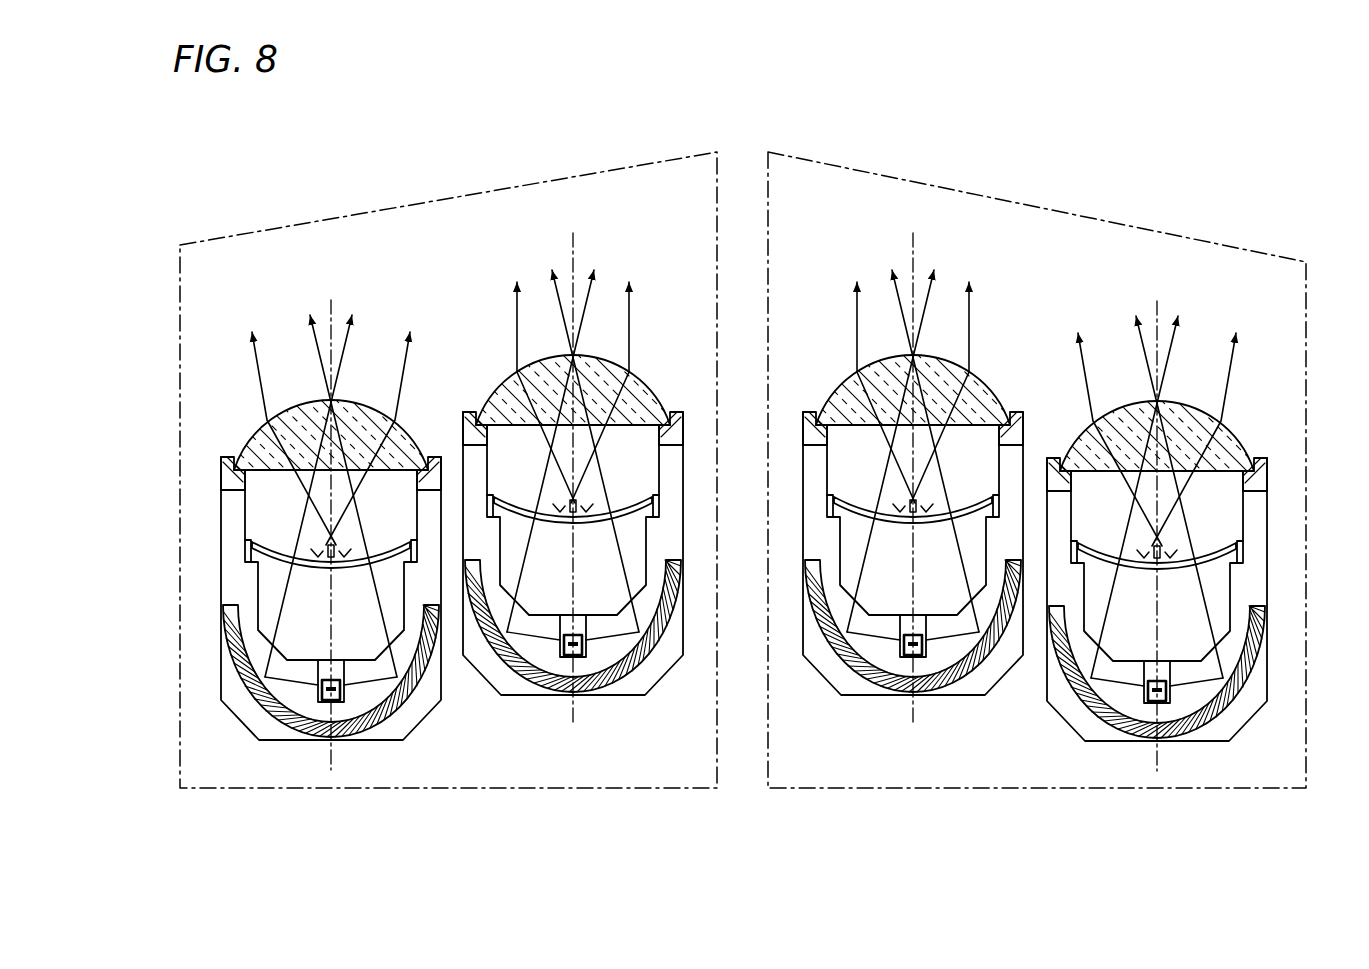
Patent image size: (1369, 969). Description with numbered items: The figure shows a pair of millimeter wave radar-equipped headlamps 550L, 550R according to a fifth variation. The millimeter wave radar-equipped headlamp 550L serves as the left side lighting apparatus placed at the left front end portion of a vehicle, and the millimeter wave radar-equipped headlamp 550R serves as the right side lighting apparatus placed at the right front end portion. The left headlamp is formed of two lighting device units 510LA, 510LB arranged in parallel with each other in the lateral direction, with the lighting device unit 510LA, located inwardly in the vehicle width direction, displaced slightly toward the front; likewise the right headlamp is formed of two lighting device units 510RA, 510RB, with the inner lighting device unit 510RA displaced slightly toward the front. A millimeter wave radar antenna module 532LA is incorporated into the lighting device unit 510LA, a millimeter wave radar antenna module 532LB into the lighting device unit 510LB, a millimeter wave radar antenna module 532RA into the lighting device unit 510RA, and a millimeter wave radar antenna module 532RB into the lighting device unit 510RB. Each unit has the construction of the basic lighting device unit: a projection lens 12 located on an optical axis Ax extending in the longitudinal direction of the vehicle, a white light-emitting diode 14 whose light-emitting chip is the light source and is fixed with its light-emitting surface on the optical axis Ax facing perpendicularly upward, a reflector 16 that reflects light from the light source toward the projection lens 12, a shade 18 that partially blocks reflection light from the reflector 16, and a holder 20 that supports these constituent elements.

The projection lens 12 is at (645, 383).
The white light-emitting diode 14 is at (594, 650).
The reflector 16 is at (513, 668).
The shade 18 is at (632, 517).
The holder 20 is at (545, 698).
The optical axis Ax is at (575, 252).
The lighting device unit 510LA is at (557, 462).
The lighting device unit 510LB is at (291, 476).
The lighting device unit 510RA is at (890, 429).
The lighting device unit 510RB is at (1135, 477).
The millimeter wave radar-equipped headlamp 550L is at (400, 207).
The millimeter wave radar-equipped headlamp 550R is at (1077, 218).
The millimeter wave radar antenna module 532LA is at (565, 493).
The millimeter wave radar antenna module 532LB is at (340, 537).
The millimeter wave radar antenna module 532RA is at (921, 493).
The millimeter wave radar antenna module 532RB is at (1147, 537).